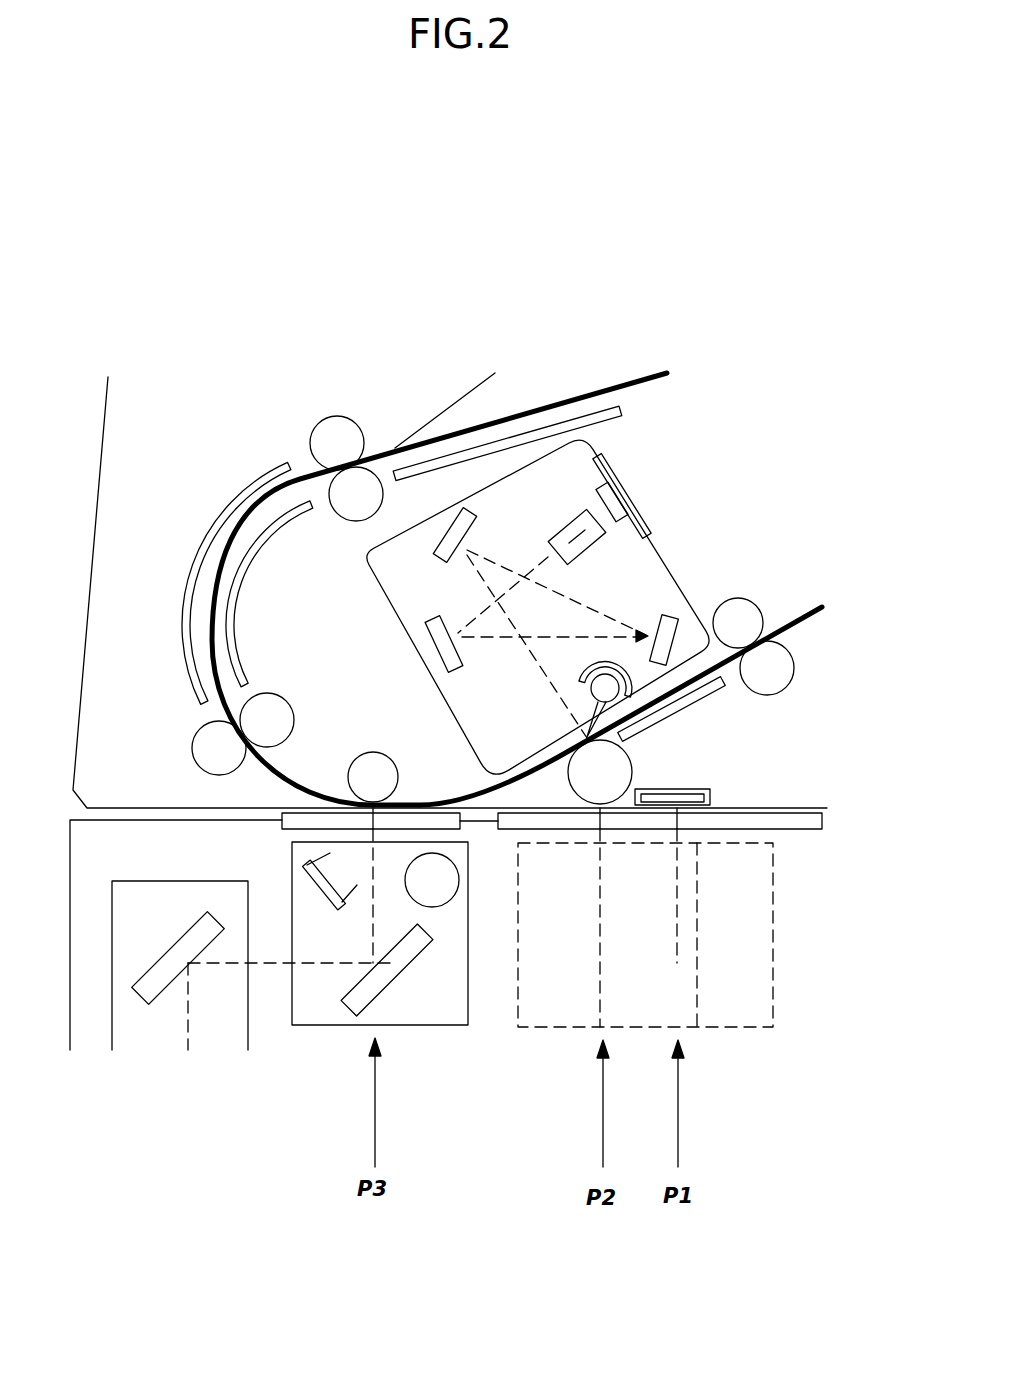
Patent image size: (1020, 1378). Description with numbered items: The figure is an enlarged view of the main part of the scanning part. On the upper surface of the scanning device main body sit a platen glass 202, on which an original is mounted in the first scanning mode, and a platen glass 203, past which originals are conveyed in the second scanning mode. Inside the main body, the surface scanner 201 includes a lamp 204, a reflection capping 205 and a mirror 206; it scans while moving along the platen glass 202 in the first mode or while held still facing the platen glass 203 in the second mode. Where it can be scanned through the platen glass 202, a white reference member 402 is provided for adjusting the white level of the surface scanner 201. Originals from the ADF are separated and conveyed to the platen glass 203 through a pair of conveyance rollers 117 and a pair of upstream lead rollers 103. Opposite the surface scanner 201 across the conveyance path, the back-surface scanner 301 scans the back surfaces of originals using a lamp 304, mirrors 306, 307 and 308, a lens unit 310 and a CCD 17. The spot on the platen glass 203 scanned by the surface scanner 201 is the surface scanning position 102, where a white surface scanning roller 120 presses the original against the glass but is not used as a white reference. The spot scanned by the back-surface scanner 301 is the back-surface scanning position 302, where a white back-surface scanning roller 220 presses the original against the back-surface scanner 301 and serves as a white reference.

The CCD 17 is at (630, 487).
The surface scanning position 102 is at (373, 802).
The pair of upstream lead rollers 103 is at (193, 745).
The pair of conveyance rollers 117 is at (330, 430).
The surface scanning roller 120 is at (373, 762).
The surface scanner 201 is at (403, 1027).
The platen glass 202 is at (785, 822).
The platen glass 203 is at (290, 818).
The lamp 204 is at (440, 890).
The reflection capping 205 is at (313, 877).
The mirror 206 is at (343, 1013).
The back-surface scanning roller 220 is at (624, 771).
The back-surface scanner 301 is at (665, 555).
The back-surface scanning position 302 is at (585, 738).
The lamp 304 is at (578, 683).
The mirror 306 is at (400, 553).
The mirror 307 is at (675, 617).
The mirror 308 is at (418, 620).
The lens unit 310 is at (568, 518).
The white reference member 402 is at (710, 793).